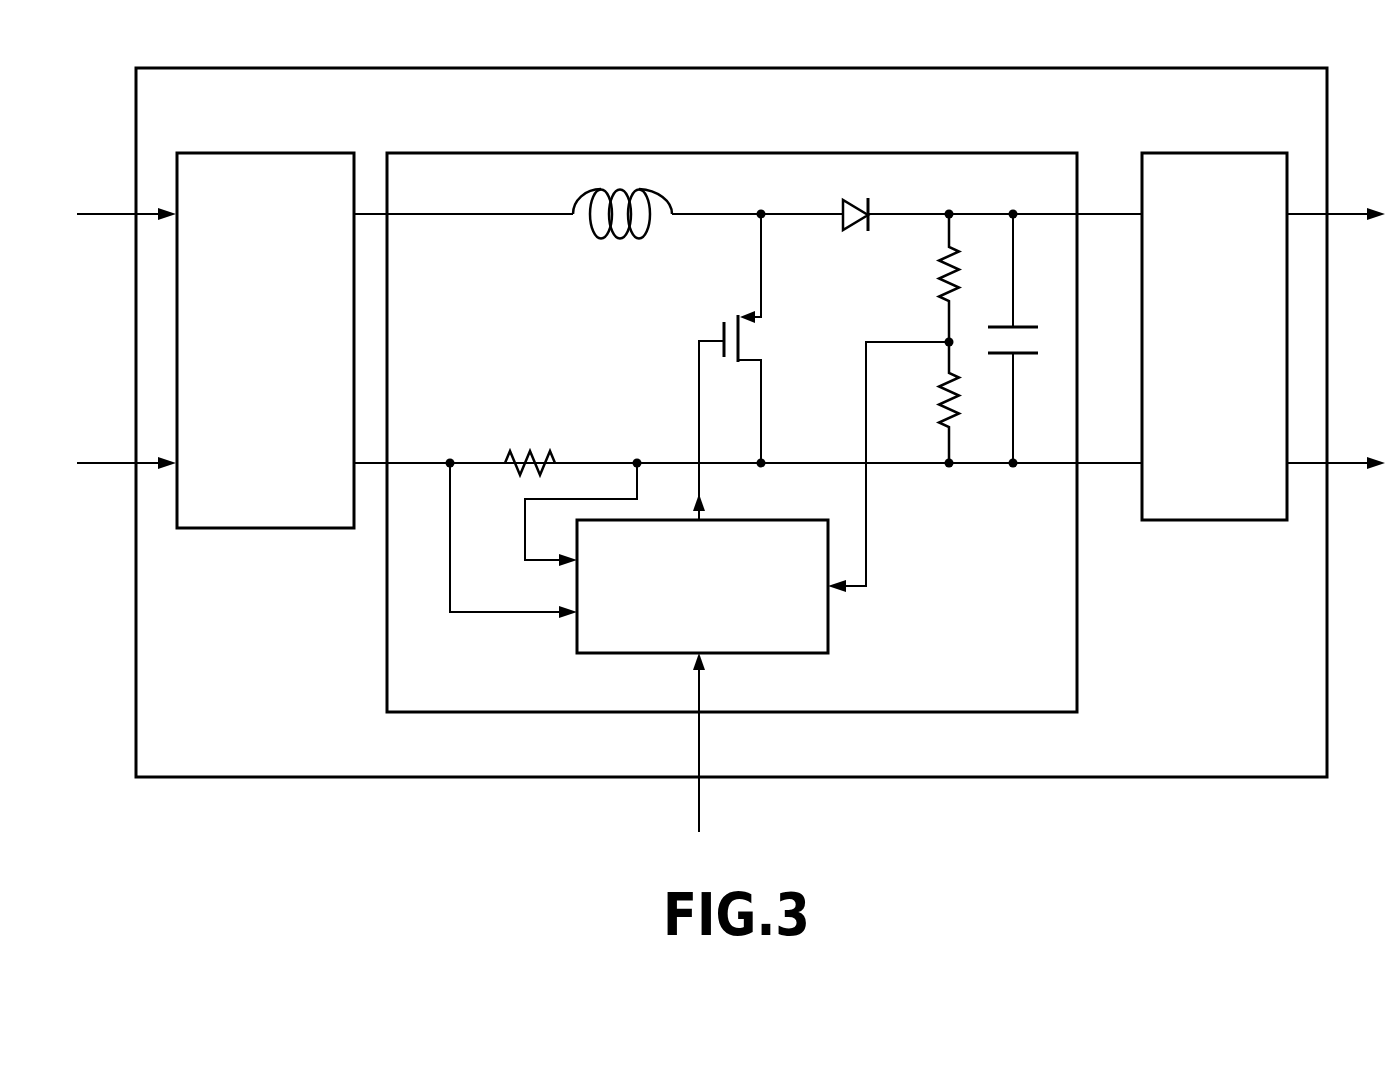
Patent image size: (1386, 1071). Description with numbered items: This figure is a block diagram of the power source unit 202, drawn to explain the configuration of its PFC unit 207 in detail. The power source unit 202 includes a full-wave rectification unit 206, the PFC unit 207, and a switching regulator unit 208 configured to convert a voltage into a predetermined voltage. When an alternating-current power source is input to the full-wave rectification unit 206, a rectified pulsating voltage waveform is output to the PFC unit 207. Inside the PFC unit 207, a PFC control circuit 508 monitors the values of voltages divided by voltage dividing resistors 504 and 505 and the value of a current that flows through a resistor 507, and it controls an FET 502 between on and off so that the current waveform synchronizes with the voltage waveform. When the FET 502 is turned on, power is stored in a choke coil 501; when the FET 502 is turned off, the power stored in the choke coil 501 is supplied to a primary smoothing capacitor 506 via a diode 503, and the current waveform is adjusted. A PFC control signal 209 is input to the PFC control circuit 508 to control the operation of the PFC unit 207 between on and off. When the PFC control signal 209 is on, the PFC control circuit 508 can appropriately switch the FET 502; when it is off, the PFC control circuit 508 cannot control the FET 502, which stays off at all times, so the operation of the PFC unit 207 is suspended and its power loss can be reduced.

The power source unit 202 is at (1255, 68).
The full-wave rectification unit 206 is at (285, 152).
The PFC unit 207 is at (1012, 153).
The switching regulator unit 208 is at (1222, 153).
The PFC control signal 209 is at (697, 797).
The choke coil 501 is at (664, 195).
The FET 502 is at (725, 325).
The diode 503 is at (847, 233).
The voltage dividing resistor 504 is at (943, 298).
The voltage dividing resistor 505 is at (948, 425).
The primary smoothing capacitor 506 is at (1025, 323).
The resistor 507 is at (552, 453).
The PFC control circuit 508 is at (758, 518).